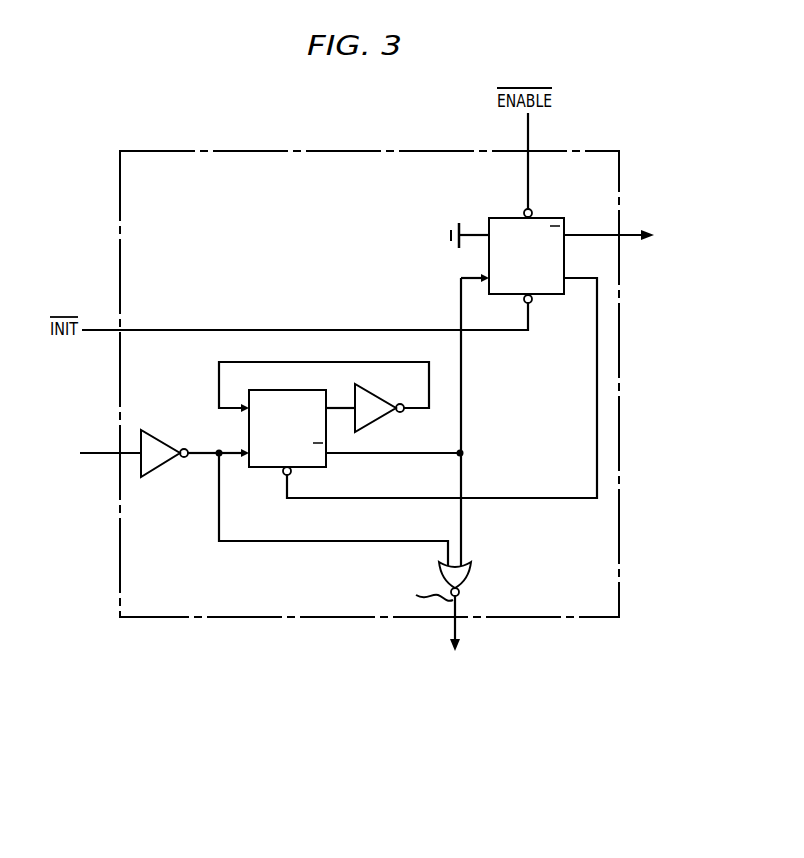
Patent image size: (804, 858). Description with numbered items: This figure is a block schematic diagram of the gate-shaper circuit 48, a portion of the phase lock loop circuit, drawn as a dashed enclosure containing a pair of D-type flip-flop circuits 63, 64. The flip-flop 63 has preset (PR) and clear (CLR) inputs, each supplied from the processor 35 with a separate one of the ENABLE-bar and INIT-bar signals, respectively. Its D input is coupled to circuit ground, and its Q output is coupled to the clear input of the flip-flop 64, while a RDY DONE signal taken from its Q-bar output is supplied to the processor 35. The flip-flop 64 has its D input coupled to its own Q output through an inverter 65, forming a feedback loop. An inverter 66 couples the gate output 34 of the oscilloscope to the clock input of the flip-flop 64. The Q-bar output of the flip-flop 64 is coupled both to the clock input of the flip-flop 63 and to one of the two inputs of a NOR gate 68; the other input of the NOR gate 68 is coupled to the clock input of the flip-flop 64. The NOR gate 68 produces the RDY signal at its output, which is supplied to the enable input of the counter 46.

The gate-shaper circuit 48 is at (369, 384).
The gate output 34 is at (75, 458).
The processor 35 is at (643, 236).
The counter 46 is at (456, 679).
The flip-flop 63 is at (557, 218).
The flip-flop 64 is at (268, 470).
The inverter 65 is at (381, 394).
The inverter 66 is at (165, 441).
The NOR gate 68 is at (472, 575).